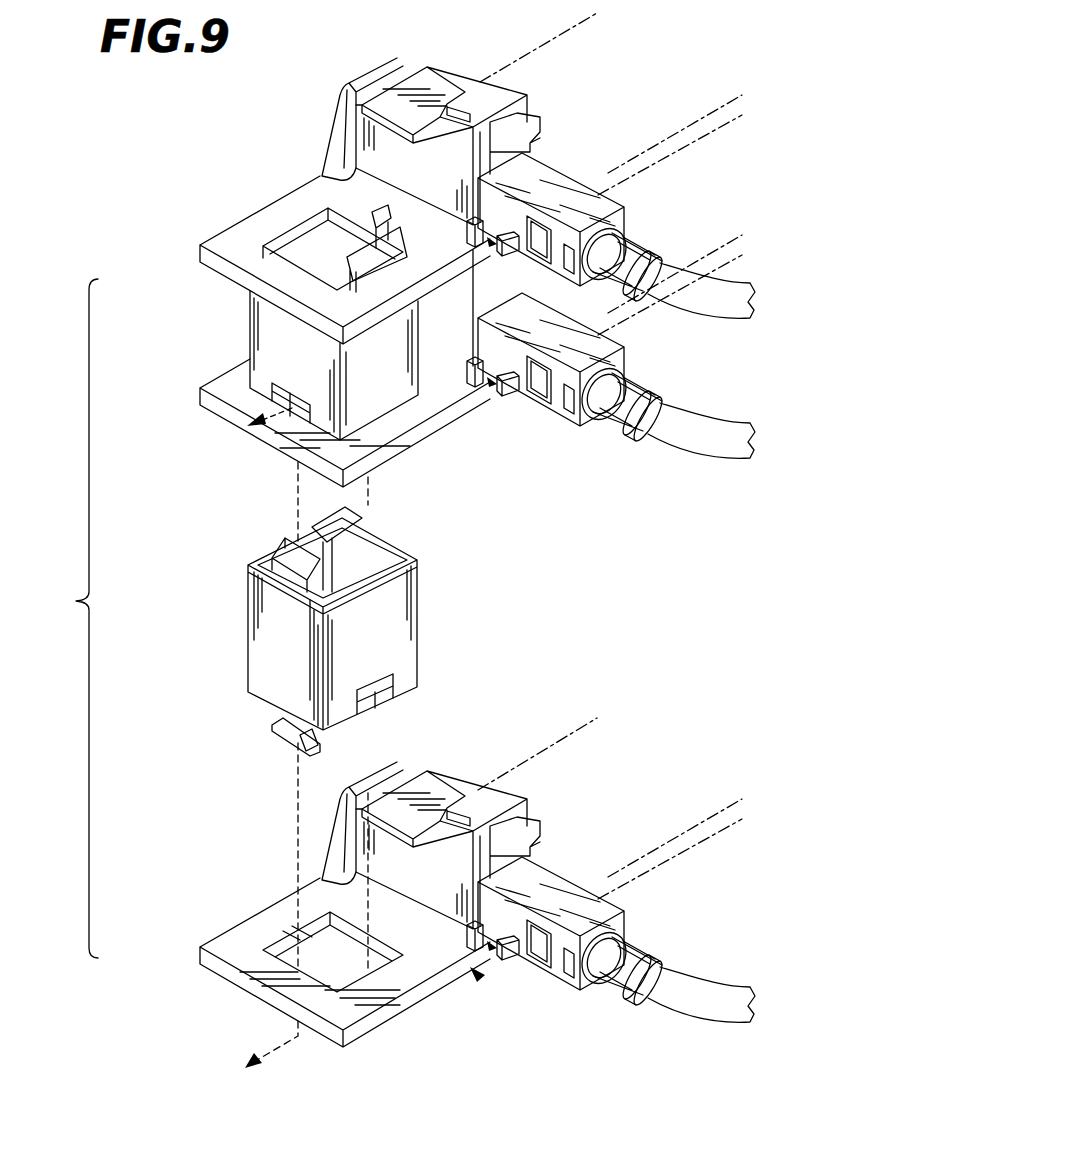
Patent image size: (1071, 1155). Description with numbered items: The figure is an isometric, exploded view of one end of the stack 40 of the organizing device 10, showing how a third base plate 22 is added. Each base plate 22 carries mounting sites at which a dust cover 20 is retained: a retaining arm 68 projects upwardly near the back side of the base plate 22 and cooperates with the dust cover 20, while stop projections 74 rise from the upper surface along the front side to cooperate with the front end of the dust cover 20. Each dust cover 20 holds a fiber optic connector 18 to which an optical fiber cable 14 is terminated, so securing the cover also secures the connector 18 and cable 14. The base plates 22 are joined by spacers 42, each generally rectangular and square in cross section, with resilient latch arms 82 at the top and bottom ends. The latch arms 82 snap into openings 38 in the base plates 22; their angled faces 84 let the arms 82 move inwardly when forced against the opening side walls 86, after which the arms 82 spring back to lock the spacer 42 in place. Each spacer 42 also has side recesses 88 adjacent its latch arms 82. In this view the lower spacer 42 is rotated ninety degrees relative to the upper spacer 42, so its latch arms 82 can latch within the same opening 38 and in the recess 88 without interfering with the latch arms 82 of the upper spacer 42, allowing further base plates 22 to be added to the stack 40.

The organizing device 10 is at (476, 974).
The optical fiber cable 14 is at (746, 286).
The fiber optic connector 18 is at (550, 177).
The dust cover 20 is at (522, 92).
The base plate 22 is at (228, 240).
The opening 38 is at (265, 240).
The stack 40 is at (76, 601).
The spacer 42 is at (256, 327).
The retaining arm 68 is at (362, 70).
The stop projection 74 is at (477, 232).
The latch arm 82 is at (376, 240).
The angled face 84 is at (378, 260).
The opening side wall 86 is at (293, 933).
The side recess 88 is at (290, 386).